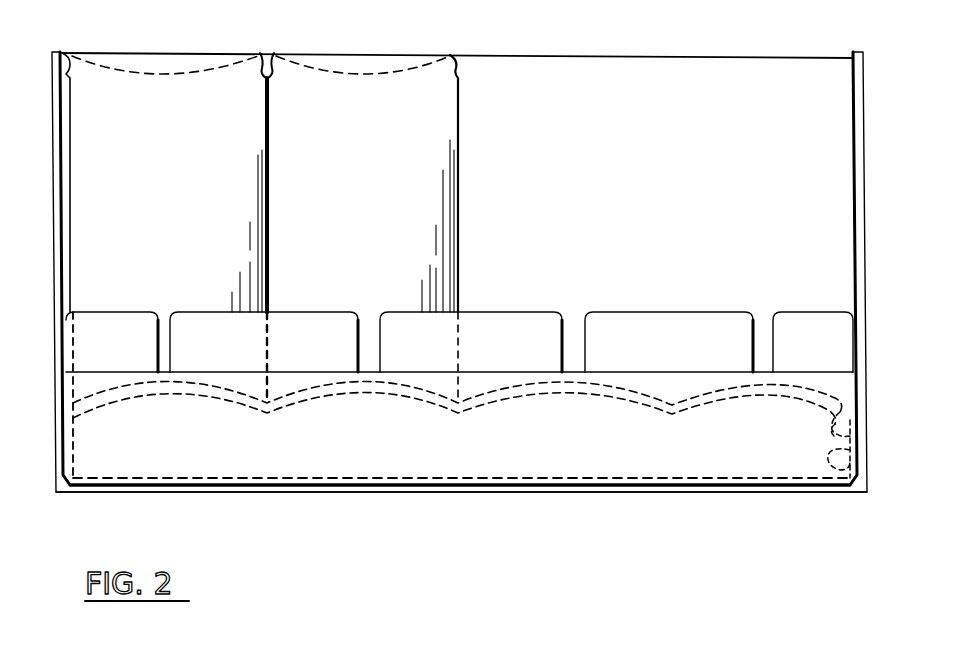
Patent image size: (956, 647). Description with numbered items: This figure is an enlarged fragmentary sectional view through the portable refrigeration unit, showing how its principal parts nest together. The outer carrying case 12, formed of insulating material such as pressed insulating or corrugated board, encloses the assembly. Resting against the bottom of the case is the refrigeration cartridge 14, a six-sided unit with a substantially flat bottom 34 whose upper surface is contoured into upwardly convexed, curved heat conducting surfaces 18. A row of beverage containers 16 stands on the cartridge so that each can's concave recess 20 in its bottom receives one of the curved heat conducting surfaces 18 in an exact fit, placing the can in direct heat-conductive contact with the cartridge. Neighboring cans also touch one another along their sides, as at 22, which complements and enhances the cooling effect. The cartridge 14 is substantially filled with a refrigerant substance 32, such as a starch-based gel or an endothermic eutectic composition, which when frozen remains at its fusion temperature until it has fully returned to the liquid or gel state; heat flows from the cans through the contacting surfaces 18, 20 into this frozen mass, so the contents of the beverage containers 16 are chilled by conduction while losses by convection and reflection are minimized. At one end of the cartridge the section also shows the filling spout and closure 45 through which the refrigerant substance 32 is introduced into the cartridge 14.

The outer carrying case 12 is at (55, 333).
The refrigeration cartridge 14 is at (213, 487).
The beverage containers 16 is at (182, 63).
The curved heat conducting surfaces 18 is at (427, 390).
The concave recesses 20 is at (173, 380).
The contact between adjacent beverage cans 22 is at (262, 192).
The refrigerant substance 32 is at (730, 448).
The flat bottom 34 is at (378, 487).
The filling spout and closure 45 is at (863, 440).